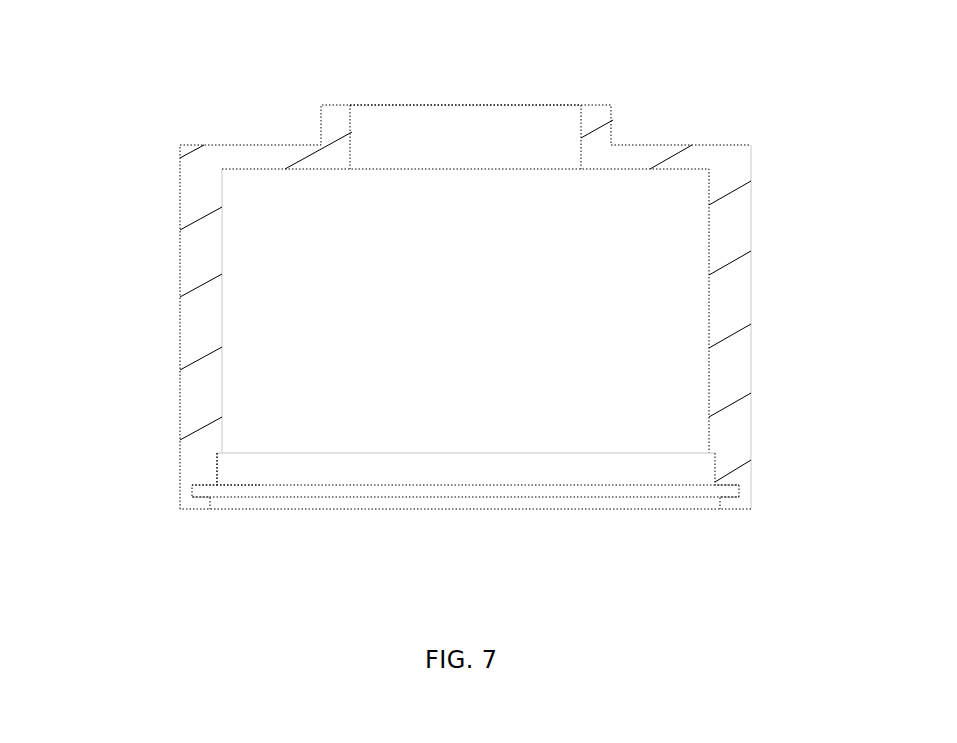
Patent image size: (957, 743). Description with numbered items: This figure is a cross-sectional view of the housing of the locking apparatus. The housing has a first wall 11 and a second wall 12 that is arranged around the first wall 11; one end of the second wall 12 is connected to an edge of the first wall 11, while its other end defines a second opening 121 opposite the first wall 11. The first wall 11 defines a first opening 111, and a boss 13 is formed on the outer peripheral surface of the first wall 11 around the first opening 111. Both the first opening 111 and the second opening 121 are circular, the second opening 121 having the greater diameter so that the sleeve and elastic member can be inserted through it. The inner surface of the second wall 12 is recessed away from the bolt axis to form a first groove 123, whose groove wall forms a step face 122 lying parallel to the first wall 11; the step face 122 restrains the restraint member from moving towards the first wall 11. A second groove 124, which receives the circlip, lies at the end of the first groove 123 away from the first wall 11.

The first wall 11 is at (277, 153).
The first opening 111 is at (524, 104).
The second wall 12 is at (197, 275).
The second opening 121 is at (607, 526).
The step face 122 is at (220, 452).
The first groove 123 is at (240, 487).
The second groove 124 is at (749, 513).
The boss 13 is at (605, 116).